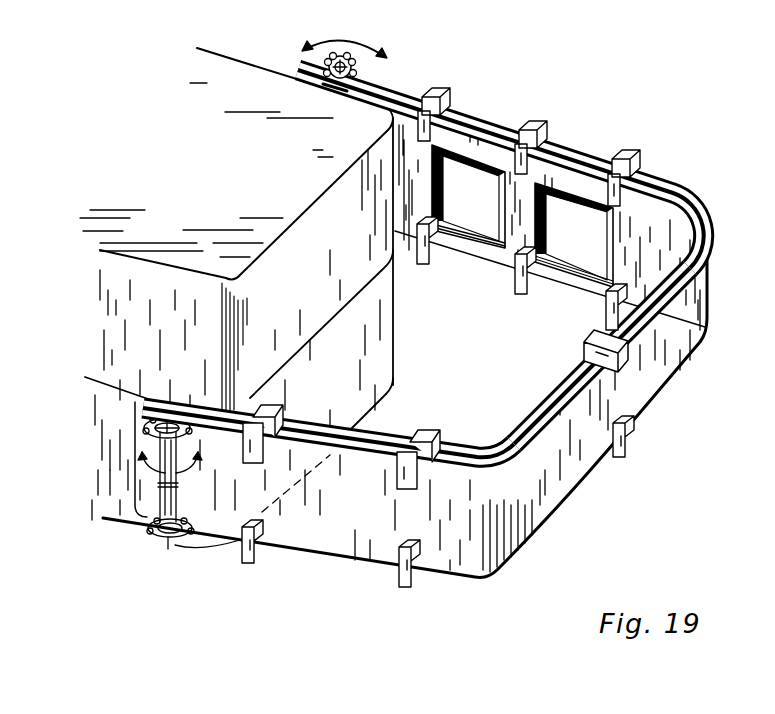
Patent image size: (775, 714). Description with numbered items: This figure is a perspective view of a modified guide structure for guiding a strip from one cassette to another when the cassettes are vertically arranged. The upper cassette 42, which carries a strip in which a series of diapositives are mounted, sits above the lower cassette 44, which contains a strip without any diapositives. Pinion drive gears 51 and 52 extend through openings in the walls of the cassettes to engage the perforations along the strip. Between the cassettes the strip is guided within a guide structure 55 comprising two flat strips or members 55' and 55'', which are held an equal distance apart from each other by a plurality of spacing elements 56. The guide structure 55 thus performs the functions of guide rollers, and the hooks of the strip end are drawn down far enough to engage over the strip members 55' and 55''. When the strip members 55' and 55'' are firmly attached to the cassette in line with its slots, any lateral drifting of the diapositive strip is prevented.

The upper cassette 42 is at (319, 286).
The lower cassette 44 is at (348, 394).
The pinion drive gear 51 is at (360, 72).
The pinion drive gear 52 is at (190, 443).
The guide structure 55 is at (501, 243).
The flat strip member 55' is at (595, 356).
The flat strip member 55'' is at (338, 430).
The spacing element 56 is at (612, 158).